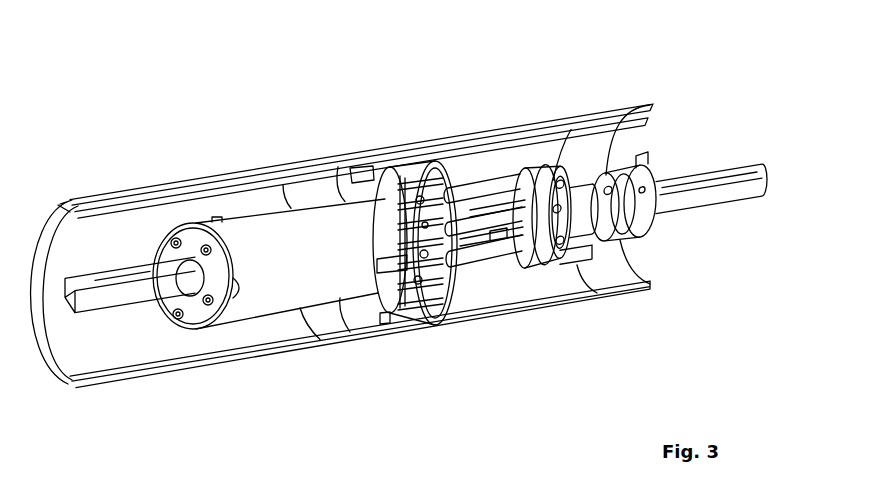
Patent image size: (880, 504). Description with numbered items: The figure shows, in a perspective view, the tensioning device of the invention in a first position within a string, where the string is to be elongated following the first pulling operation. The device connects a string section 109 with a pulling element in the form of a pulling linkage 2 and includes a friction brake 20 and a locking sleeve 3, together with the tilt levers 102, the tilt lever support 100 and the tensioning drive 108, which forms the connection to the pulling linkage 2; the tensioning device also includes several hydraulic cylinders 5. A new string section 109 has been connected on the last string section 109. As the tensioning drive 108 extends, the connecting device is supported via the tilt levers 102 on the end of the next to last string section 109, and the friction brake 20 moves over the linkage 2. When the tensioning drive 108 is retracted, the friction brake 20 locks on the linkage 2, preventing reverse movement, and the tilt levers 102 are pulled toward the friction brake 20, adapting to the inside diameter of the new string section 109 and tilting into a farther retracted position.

The string section 109 is at (193, 181).
The tilt lever support 100 is at (448, 165).
The tilt levers 102 is at (402, 158).
The hydraulic cylinders 5 is at (503, 257).
The tensioning drive 108 is at (467, 290).
The friction brake 20 is at (677, 252).
The locking sleeve 3 is at (620, 258).
The pulling linkage 2 is at (751, 178).